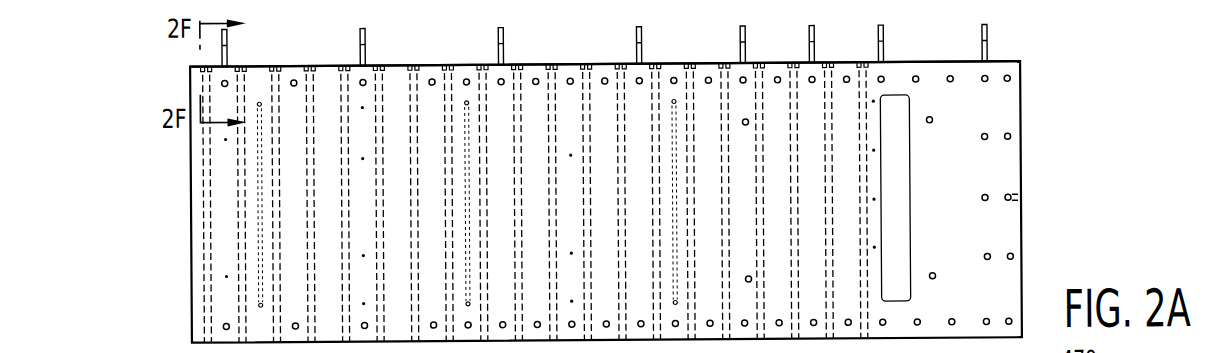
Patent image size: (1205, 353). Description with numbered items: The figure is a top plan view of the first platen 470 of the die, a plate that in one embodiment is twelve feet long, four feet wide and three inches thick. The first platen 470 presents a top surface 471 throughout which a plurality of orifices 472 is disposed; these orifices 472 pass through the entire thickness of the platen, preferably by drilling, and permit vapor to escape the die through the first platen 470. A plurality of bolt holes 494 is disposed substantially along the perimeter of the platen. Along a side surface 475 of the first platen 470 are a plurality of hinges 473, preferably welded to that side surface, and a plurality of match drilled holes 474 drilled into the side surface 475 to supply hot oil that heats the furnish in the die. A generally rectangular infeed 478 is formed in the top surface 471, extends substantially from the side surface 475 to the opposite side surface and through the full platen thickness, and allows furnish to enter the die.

The first platen 470 is at (1023, 133).
The top surface 471 is at (972, 118).
The orifices 472 is at (571, 105).
The hinges 473 is at (231, 47).
The match drilled holes 474 is at (276, 64).
The side surface 475 is at (668, 65).
The infeed 478 is at (893, 107).
The bolt holes 494 is at (778, 75).